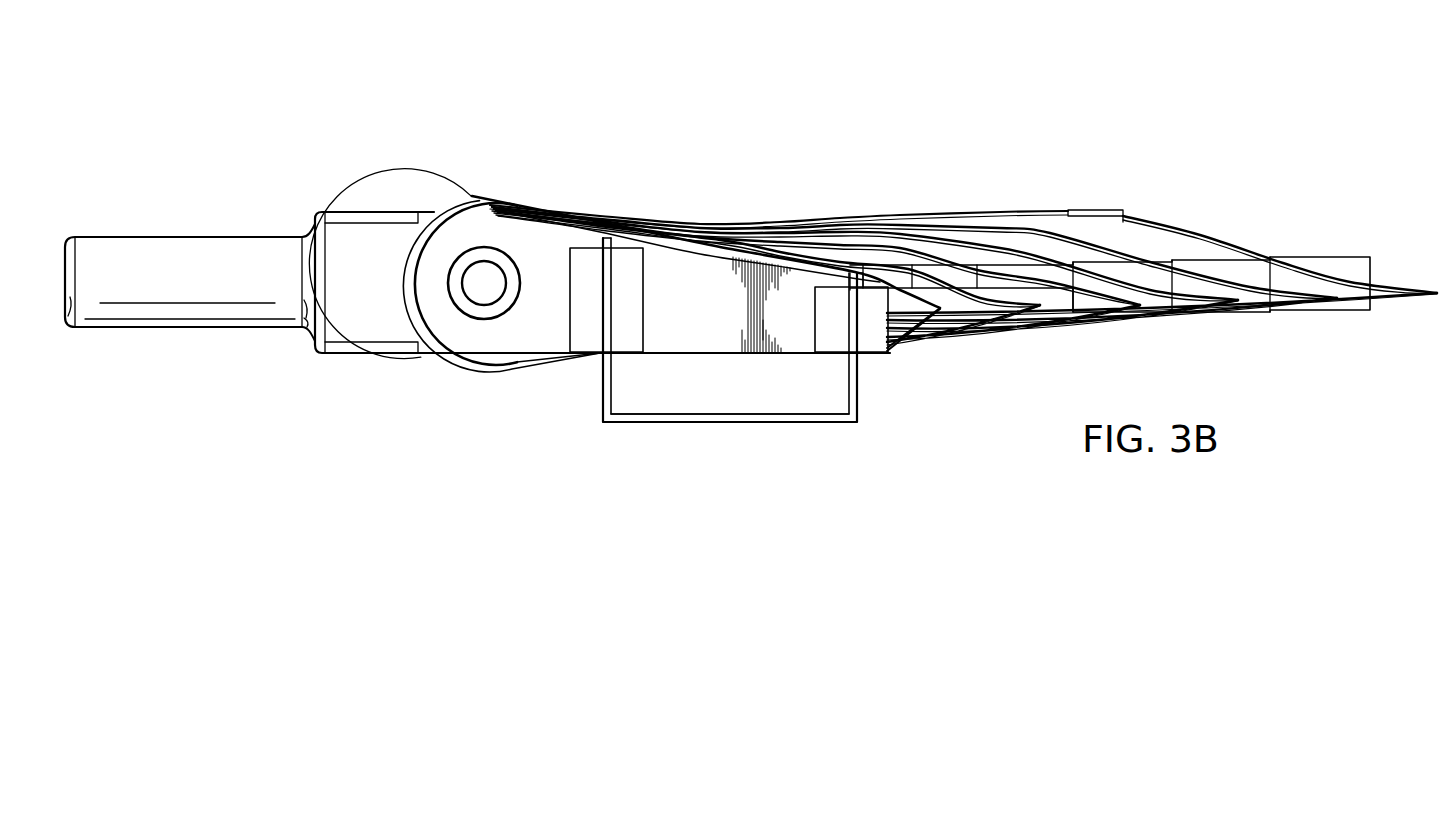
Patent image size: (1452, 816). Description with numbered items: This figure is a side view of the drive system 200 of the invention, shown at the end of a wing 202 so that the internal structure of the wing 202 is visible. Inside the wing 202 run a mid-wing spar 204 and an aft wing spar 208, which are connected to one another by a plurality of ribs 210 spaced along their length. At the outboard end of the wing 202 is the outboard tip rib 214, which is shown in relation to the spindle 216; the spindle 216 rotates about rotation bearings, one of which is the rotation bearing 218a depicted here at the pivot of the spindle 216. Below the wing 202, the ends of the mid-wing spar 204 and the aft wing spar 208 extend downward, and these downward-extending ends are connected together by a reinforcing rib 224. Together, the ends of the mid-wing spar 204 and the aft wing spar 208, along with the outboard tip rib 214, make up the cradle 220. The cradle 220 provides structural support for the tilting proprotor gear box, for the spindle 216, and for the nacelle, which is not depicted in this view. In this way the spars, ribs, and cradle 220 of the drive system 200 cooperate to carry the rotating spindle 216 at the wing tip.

The drive system 200 is at (902, 104).
The wing 202 is at (1178, 222).
The mid-wing spar 204 is at (603, 387).
The aft wing spar 208 is at (1336, 257).
The ribs 210 is at (938, 303).
The outboard tip rib 214 is at (708, 356).
The spindle 216 is at (188, 327).
The rotation bearing 218a is at (482, 274).
The cradle 220 is at (772, 437).
The reinforcing rib 224 is at (626, 424).